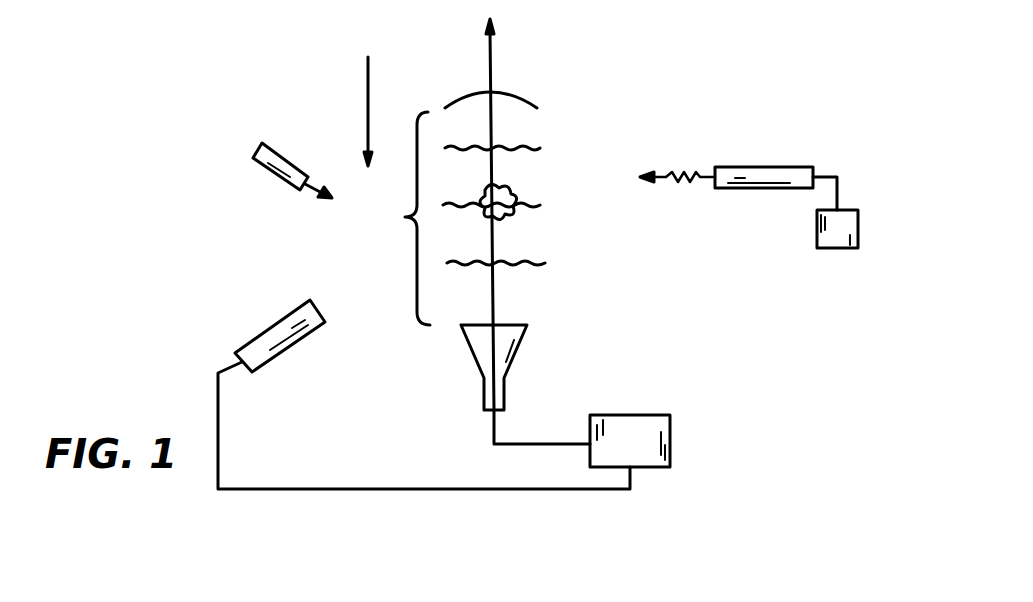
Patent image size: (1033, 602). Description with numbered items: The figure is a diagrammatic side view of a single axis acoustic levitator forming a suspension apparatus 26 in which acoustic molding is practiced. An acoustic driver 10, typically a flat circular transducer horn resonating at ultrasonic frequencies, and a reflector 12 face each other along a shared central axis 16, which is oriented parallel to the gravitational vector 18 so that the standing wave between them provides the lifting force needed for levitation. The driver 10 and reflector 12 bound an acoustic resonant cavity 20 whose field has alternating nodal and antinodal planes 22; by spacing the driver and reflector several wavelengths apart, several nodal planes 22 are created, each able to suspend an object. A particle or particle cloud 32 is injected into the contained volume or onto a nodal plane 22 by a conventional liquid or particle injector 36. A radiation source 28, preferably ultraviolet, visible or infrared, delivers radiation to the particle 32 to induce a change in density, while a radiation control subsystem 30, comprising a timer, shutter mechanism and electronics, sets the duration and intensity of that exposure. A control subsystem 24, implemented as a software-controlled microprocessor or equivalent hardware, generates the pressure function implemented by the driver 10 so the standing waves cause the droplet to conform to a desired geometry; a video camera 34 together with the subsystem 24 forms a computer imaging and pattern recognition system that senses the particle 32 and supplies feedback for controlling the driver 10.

The acoustic driver 10 is at (518, 352).
The reflector 12 is at (537, 100).
The single axis 16 is at (490, 70).
The gravitational vector 18 is at (368, 98).
The acoustic resonant cavity 20 is at (405, 217).
The nodal plane 22 is at (548, 140).
The control subsystem 24 is at (670, 443).
The suspension apparatus 26 is at (276, 211).
The radiation source 28 is at (757, 167).
The radiation control subsystem 30 is at (840, 248).
The particle or particle cloud 32 is at (505, 215).
The video camera 34 is at (257, 332).
The liquid or particle injector 36 is at (275, 140).